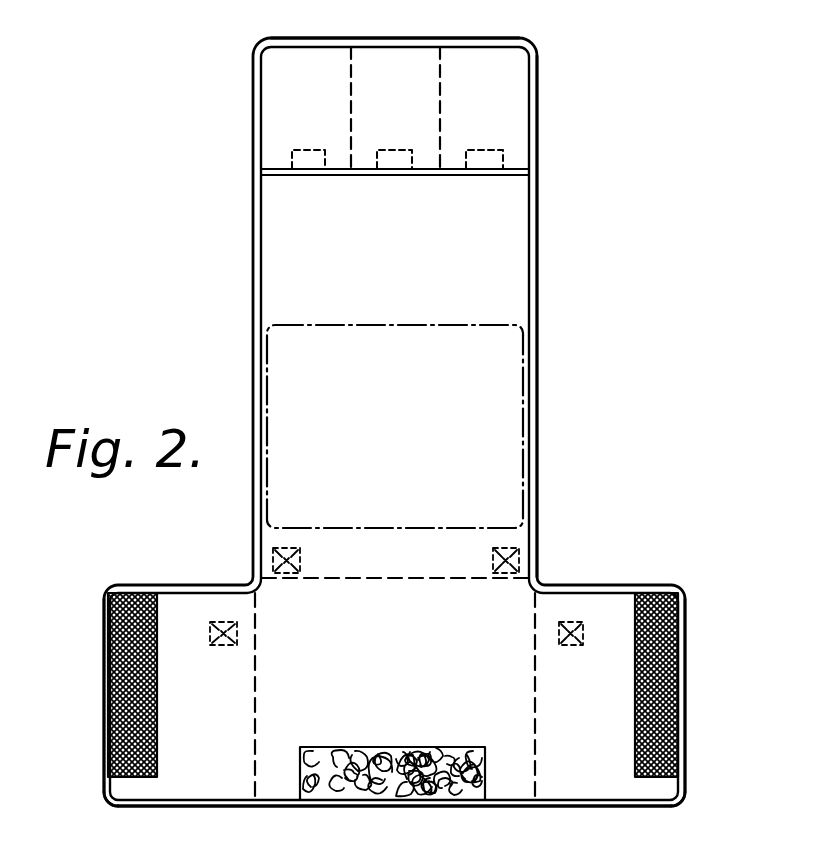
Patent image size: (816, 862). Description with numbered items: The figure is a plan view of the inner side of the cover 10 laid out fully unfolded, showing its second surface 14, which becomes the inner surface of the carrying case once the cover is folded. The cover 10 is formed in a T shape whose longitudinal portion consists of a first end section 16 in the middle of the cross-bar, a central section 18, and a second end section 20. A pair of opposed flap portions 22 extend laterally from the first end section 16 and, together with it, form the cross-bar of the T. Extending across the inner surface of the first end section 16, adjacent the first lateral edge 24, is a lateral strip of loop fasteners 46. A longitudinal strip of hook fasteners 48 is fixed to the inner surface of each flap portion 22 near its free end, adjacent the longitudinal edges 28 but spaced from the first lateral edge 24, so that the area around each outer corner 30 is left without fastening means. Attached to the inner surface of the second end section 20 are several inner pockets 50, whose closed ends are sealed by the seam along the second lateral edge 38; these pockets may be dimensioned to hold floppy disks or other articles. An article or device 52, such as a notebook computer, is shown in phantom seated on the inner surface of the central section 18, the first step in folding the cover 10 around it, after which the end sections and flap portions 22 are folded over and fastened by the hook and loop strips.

The cover 10 is at (599, 249).
The second surface 14 is at (537, 350).
The first end section 16 is at (380, 652).
The central section 18 is at (378, 569).
The second end section 20 is at (385, 246).
The flap portions 22 is at (189, 695).
The first lateral edge 24 is at (193, 810).
The longitudinal edges 28 is at (103, 672).
The outer corners 30 is at (104, 804).
The second lateral edge 38 is at (433, 38).
The lateral strip of loop fasteners 46 is at (376, 746).
The longitudinal strip of hook fasteners 48 is at (157, 722).
The inner pockets 50 is at (289, 104).
The article or device 52 is at (433, 438).